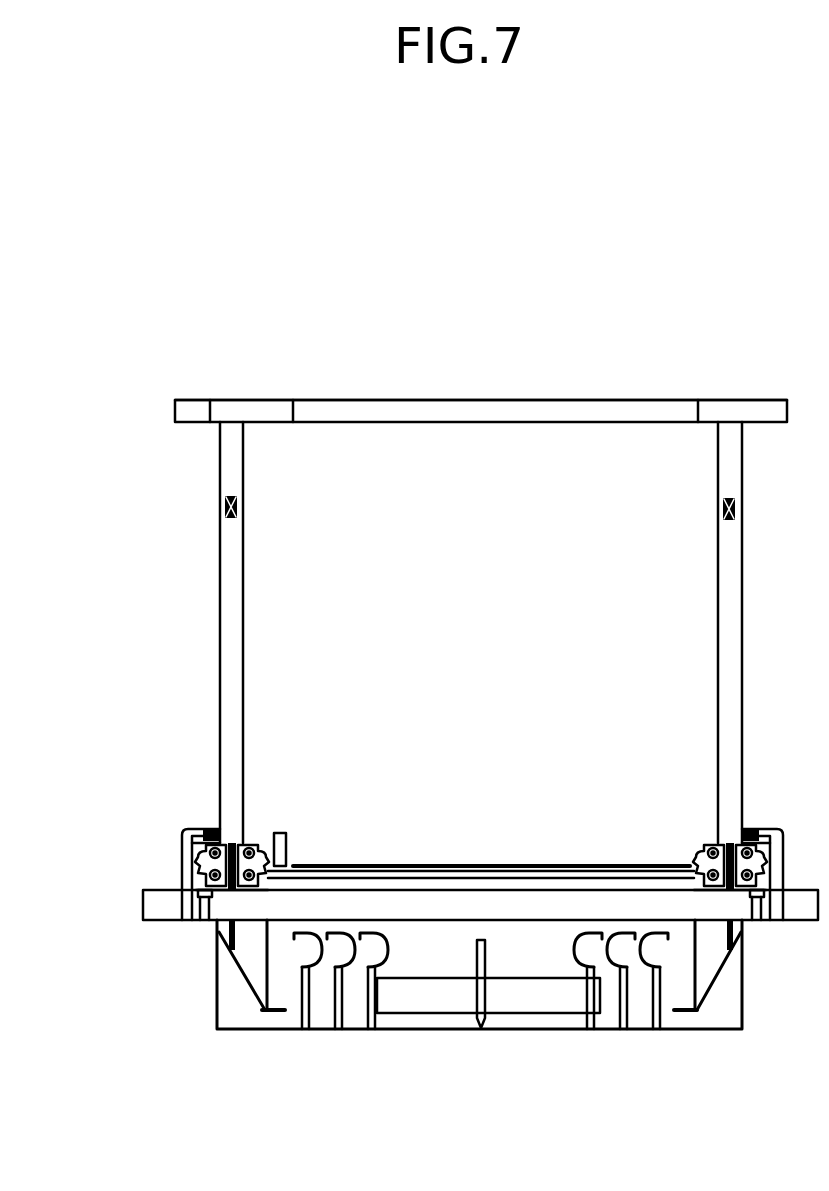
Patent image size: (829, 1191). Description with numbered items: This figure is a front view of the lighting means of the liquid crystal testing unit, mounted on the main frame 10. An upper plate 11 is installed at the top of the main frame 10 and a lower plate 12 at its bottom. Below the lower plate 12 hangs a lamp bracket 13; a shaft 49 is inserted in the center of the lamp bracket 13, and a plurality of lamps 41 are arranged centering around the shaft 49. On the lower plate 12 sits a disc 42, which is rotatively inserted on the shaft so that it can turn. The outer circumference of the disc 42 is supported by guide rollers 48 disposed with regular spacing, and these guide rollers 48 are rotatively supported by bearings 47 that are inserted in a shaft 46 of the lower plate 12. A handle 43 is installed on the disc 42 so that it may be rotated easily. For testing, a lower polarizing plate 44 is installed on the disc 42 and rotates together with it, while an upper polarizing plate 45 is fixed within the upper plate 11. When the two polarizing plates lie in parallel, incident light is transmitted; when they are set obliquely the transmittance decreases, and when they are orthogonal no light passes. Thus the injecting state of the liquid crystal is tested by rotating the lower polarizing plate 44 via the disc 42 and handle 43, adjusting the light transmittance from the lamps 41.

The main frame 10 is at (230, 617).
The upper plate 11 is at (255, 412).
The lower plate 12 is at (153, 910).
The lamp bracket 13 is at (385, 1031).
The lamps 41 is at (625, 995).
The disc 42 is at (395, 873).
The handle 43 is at (285, 837).
The lower polarizing plate 44 is at (482, 863).
The upper polarizing plate 45 is at (452, 412).
The shaft of the lower plate 46 is at (222, 932).
The bearings 47 is at (200, 845).
The guide rollers 48 is at (197, 870).
The shaft 49 is at (478, 1031).